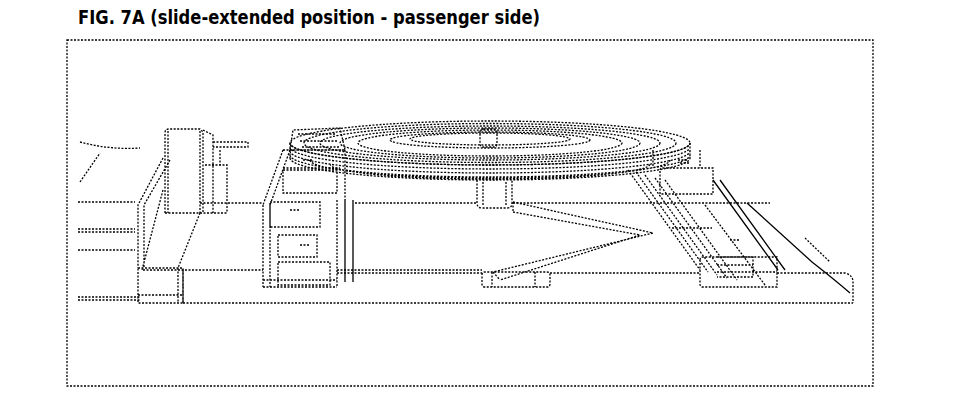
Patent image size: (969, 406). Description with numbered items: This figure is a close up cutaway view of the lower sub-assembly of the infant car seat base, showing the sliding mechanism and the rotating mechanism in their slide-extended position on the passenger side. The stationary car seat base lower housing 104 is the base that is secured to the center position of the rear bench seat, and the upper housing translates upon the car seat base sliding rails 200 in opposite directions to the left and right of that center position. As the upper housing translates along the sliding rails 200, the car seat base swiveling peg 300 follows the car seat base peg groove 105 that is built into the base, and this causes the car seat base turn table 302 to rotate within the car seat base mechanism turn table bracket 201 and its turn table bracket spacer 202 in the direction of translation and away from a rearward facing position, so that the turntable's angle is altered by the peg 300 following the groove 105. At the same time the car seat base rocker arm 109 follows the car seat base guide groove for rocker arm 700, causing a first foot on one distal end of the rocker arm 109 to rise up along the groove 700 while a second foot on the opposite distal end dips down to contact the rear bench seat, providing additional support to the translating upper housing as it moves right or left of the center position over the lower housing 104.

The car seat base lower housing 104 is at (622, 293).
The car seat base peg groove 105 is at (527, 279).
The car seat base rocker arm 109 is at (186, 140).
The car seat base sliding rails 200 is at (302, 213).
The car seat base mechanism turn table bracket 201 is at (294, 153).
The car seat base mechanism turn table bracket spacer 202 is at (298, 183).
The car seat base swiveling peg 300 is at (492, 193).
The car seat base turn table 302 is at (573, 131).
The car seat base guide groove for rocker arm 700 is at (160, 273).